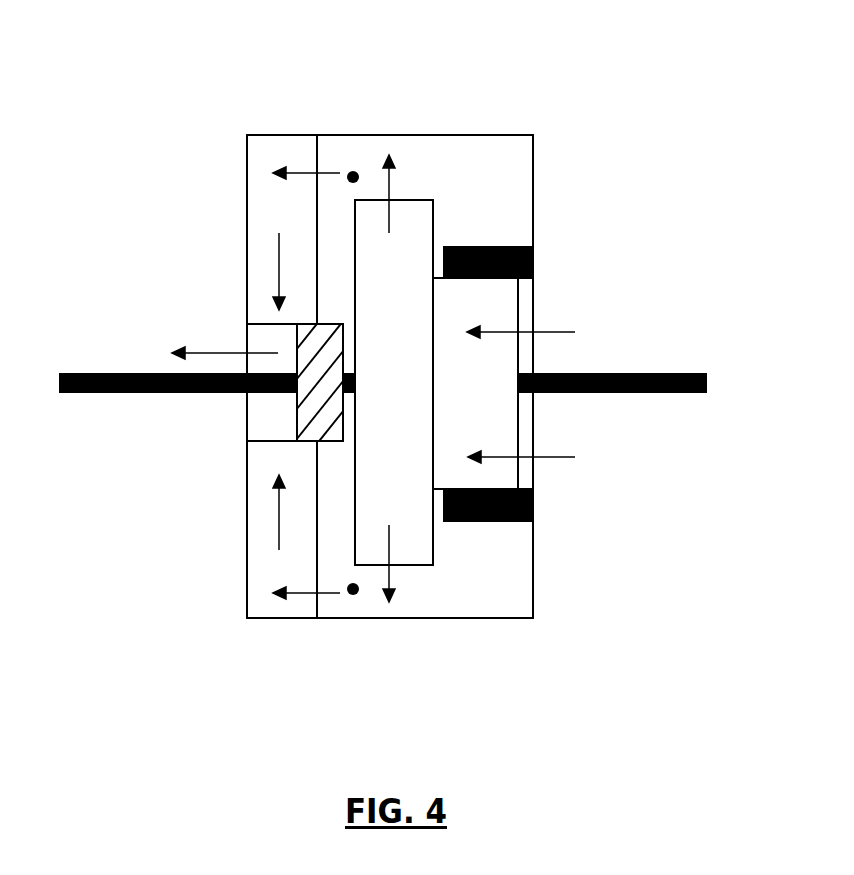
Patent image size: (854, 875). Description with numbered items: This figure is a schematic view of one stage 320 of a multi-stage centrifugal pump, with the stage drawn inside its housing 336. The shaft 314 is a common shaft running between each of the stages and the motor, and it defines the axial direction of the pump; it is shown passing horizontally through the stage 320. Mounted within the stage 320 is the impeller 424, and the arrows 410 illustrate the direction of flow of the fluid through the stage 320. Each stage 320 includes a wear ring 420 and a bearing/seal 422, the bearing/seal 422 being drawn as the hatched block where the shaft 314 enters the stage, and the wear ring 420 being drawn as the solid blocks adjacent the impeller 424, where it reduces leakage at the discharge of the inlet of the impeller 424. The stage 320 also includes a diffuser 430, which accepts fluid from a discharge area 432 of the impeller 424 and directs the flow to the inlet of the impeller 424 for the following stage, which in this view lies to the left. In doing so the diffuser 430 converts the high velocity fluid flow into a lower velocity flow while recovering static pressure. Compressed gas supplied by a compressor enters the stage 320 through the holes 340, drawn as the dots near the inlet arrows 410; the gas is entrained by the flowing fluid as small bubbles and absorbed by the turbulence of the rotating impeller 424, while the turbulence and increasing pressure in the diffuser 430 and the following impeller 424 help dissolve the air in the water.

The stage 320 is at (540, 78).
The shaft 314 is at (82, 393).
The housing 336 is at (462, 618).
The holes 340 is at (354, 170).
The arrows 410 is at (298, 172).
The wear ring 420 is at (510, 522).
The bearing/seal 422 is at (307, 423).
The impeller 424 is at (425, 215).
The diffuser 430 is at (258, 308).
The discharge area 432 is at (408, 159).